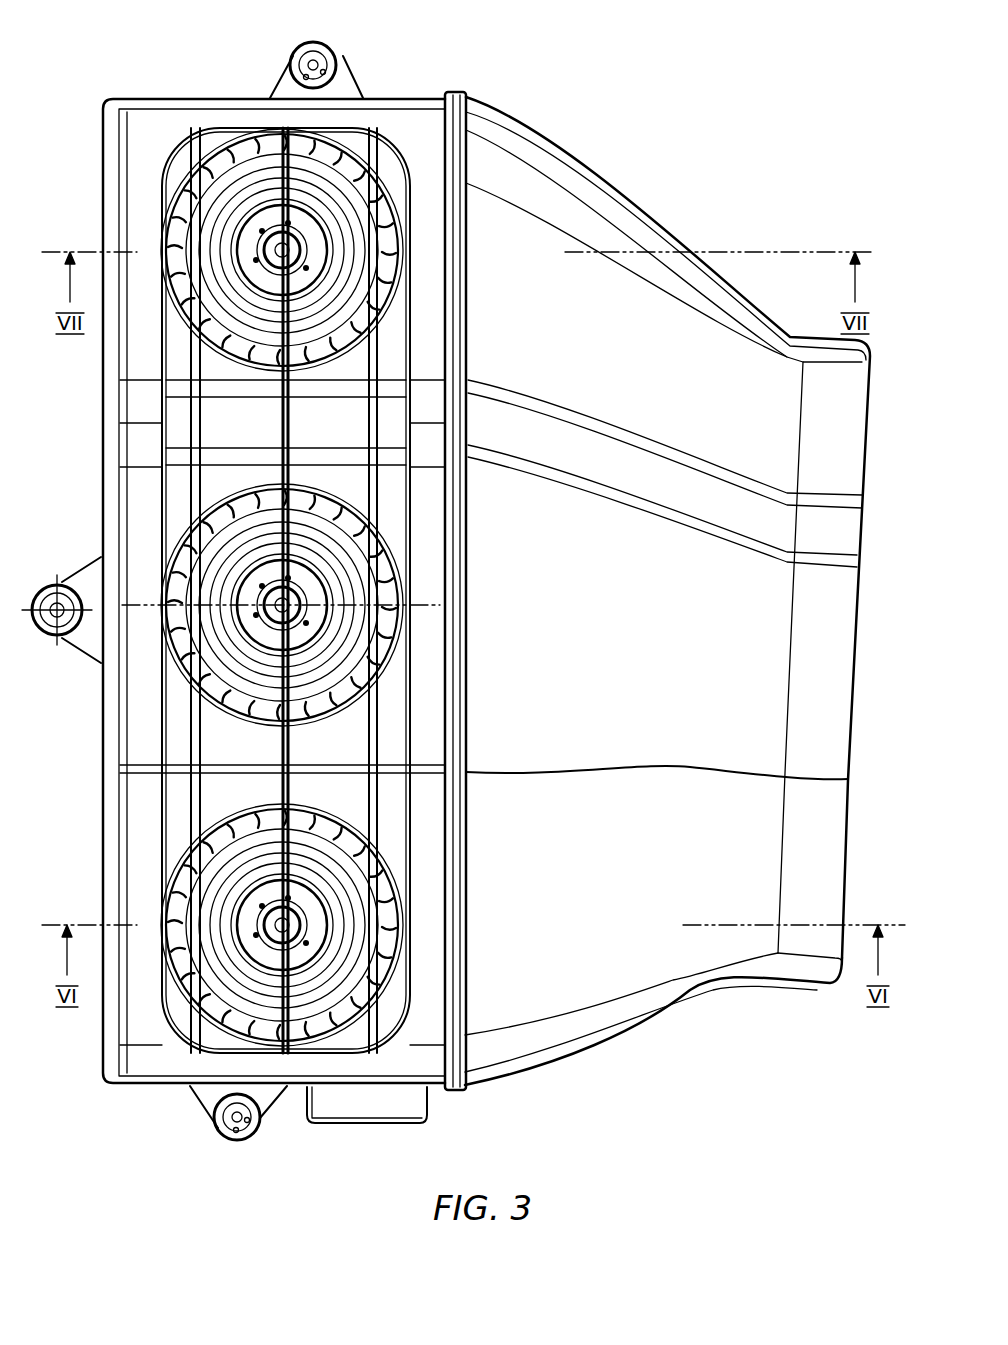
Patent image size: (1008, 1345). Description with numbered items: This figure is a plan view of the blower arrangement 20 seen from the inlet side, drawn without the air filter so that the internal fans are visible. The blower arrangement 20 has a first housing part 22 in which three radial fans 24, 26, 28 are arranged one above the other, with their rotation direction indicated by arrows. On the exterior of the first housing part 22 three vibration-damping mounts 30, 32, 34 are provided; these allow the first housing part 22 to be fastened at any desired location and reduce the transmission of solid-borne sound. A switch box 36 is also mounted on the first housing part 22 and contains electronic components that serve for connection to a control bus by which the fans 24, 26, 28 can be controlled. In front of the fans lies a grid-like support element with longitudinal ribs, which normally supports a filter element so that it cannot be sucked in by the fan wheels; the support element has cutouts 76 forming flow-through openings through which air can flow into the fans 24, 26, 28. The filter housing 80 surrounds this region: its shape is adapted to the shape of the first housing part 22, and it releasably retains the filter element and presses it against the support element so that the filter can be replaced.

The blower arrangement 20 is at (472, 84).
The first housing part 22 is at (147, 1080).
The radial fan 24 is at (400, 908).
The radial fan 26 is at (400, 578).
The radial fan 28 is at (400, 239).
The vibration-damping mount 30 is at (231, 1140).
The vibration-damping mount 32 is at (44, 592).
The vibration-damping mount 34 is at (328, 53).
The switch box 36 is at (408, 1105).
The cutout 76 is at (163, 223).
The filter housing 80 is at (152, 123).